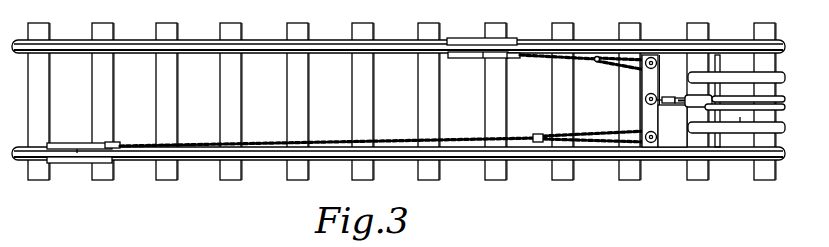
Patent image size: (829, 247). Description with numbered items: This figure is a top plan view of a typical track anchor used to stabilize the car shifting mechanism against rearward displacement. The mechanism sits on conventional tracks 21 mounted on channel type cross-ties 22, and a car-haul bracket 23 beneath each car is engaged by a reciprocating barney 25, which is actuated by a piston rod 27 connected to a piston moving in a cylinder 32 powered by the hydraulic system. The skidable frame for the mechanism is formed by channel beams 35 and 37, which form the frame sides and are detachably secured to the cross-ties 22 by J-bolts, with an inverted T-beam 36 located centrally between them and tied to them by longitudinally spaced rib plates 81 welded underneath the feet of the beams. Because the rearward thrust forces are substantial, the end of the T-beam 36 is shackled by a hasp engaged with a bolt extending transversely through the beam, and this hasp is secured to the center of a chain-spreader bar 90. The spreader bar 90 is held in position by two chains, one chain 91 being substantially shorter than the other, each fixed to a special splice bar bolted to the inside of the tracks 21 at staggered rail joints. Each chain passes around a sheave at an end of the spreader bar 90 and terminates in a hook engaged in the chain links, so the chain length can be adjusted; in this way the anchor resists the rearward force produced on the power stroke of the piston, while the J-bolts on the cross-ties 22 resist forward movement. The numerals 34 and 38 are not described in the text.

The tracks 21 is at (343, 30).
The cross-ties 22 is at (360, 95).
The car-haul bracket 23 is at (482, 58).
The barney 25 is at (542, 133).
The piston rod 27 is at (670, 97).
The cylinder 32 is at (538, 135).
The rail clamp plate 34 is at (95, 149).
The channel beam 35 is at (730, 66).
The T-beam 36 is at (750, 100).
The channel beam 37 is at (712, 128).
The cylinder 38 is at (702, 96).
The rib plates 81 is at (740, 117).
The chain-spreader bar 90 is at (650, 115).
The chain 91 is at (578, 59).